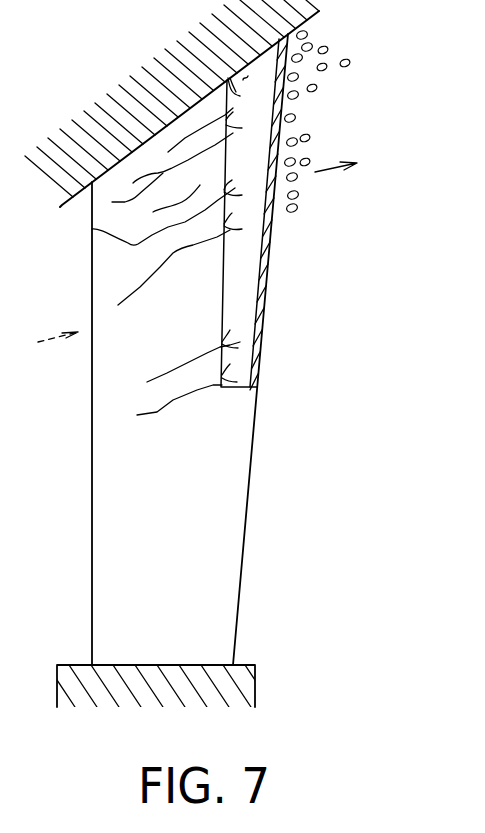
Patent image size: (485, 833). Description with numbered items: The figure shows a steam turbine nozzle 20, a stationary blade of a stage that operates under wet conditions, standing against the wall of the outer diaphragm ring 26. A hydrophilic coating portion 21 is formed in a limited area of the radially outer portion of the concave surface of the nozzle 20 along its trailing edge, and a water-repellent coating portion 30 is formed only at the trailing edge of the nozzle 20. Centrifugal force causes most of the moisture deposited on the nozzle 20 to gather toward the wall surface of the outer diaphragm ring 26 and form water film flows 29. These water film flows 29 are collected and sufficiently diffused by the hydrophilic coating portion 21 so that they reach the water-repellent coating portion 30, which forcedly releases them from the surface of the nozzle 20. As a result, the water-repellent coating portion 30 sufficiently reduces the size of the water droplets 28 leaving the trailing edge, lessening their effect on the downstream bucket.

The nozzle 20 is at (92, 527).
The hydrophilic coating portion 21 is at (240, 262).
The outer diaphragm ring 26 is at (145, 93).
The water droplets 28 is at (332, 50).
The water film flows 29 is at (112, 202).
The water-repellent coating portion 30 is at (260, 323).